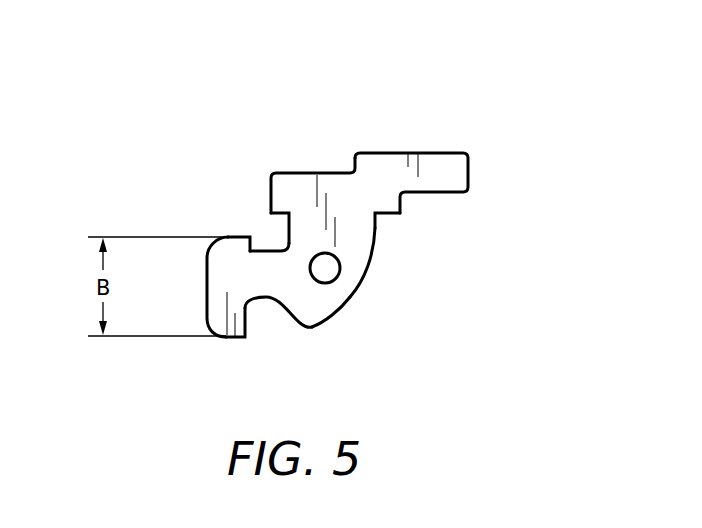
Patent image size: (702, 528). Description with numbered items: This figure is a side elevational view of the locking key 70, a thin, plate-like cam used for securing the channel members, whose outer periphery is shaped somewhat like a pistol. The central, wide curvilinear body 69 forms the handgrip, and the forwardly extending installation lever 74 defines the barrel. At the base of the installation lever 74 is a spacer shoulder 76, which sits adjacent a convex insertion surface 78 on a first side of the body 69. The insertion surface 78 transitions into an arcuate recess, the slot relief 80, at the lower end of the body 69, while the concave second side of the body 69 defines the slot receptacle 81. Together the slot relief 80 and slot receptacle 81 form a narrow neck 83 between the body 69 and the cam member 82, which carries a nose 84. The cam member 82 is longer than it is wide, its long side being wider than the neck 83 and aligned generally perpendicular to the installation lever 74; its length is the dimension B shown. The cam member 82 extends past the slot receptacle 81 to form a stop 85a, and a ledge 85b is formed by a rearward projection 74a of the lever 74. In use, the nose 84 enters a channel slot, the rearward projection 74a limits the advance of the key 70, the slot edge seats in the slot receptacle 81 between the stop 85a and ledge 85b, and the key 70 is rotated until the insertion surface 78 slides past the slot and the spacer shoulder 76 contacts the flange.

The locking key 70 is at (385, 115).
The installation lever 74 is at (428, 152).
The rearward projection 74a is at (270, 197).
The ledge 85b is at (290, 233).
The slot receptacle 81 is at (282, 240).
The stop 85a is at (258, 240).
The cam member 82 is at (206, 290).
The nose 84 is at (240, 337).
The slot relief 80 is at (267, 300).
The insertion surface 78 is at (355, 293).
The body 69 is at (350, 248).
The spacer shoulder 76 is at (383, 214).
The neck 83 is at (262, 278).